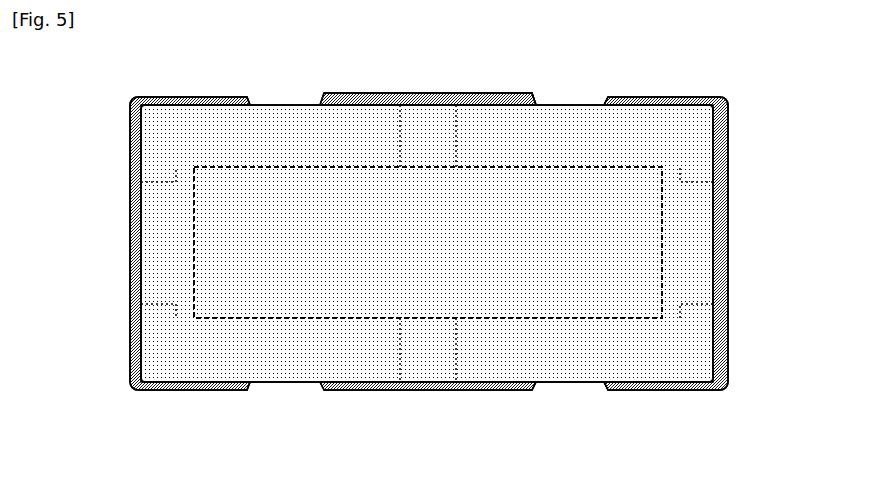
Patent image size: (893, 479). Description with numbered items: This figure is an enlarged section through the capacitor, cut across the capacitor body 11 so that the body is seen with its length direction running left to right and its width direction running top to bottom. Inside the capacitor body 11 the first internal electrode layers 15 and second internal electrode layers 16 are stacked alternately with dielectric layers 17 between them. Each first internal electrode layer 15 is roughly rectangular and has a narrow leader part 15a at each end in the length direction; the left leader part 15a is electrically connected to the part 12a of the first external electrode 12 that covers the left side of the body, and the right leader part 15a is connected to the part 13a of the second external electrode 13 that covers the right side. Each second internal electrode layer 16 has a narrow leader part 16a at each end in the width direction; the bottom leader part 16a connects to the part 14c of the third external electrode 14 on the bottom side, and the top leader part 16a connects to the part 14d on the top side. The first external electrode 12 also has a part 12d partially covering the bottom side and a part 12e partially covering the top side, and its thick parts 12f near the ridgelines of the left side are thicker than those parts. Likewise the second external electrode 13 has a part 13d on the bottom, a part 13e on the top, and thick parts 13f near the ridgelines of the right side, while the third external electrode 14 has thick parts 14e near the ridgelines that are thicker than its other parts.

The capacitor body 11 is at (281, 105).
The first external electrode 12 is at (184, 97).
The part covering one side of the capacitor body in the length direction 12a is at (130, 239).
The part partially covering one side of the capacitor body in the width direction 12d is at (200, 390).
The part partially covering the other side of the capacitor body in the width direct 12e is at (207, 97).
The thick parts 12f is at (137, 97).
The second external electrode 13 is at (663, 97).
The part covering the other side of the capacitor body in the length direction 13a is at (728, 239).
The part partially covering one side of the capacitor body in the width direction 13d is at (646, 390).
The part partially covering the other side of the capacitor body in the width direct 13e is at (649, 97).
The thick parts 13f is at (719, 97).
The third external electrode 14 is at (400, 93).
The part partially covering one side of the capacitor body in the width direction 14c is at (355, 390).
The part partially covering the other side of the capacitor body in the width direct 14d is at (355, 93).
The thick parts 14e is at (487, 93).
The first internal electrode layer 15 is at (672, 230).
The leader part 15a is at (130, 275).
The second internal electrode layer 16 is at (557, 210).
The leader part 16a is at (445, 93).
The dielectric layer 17 is at (588, 146).